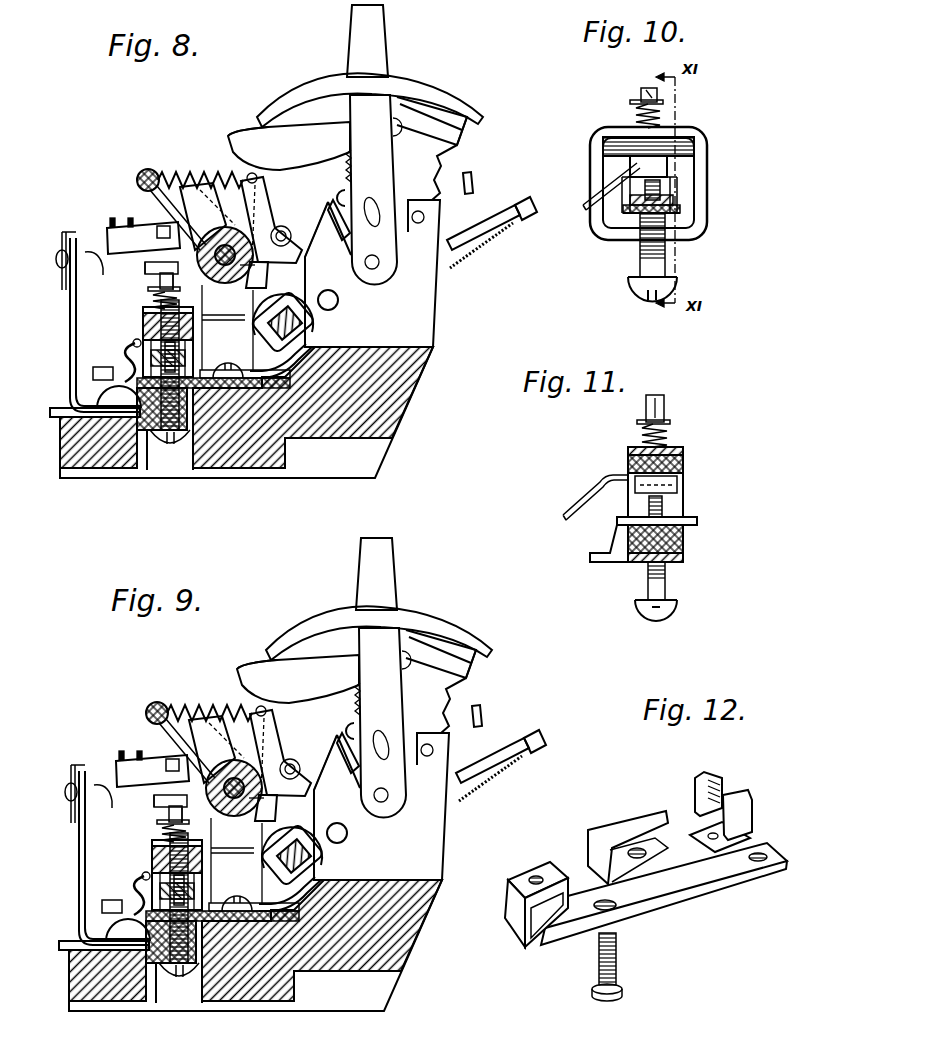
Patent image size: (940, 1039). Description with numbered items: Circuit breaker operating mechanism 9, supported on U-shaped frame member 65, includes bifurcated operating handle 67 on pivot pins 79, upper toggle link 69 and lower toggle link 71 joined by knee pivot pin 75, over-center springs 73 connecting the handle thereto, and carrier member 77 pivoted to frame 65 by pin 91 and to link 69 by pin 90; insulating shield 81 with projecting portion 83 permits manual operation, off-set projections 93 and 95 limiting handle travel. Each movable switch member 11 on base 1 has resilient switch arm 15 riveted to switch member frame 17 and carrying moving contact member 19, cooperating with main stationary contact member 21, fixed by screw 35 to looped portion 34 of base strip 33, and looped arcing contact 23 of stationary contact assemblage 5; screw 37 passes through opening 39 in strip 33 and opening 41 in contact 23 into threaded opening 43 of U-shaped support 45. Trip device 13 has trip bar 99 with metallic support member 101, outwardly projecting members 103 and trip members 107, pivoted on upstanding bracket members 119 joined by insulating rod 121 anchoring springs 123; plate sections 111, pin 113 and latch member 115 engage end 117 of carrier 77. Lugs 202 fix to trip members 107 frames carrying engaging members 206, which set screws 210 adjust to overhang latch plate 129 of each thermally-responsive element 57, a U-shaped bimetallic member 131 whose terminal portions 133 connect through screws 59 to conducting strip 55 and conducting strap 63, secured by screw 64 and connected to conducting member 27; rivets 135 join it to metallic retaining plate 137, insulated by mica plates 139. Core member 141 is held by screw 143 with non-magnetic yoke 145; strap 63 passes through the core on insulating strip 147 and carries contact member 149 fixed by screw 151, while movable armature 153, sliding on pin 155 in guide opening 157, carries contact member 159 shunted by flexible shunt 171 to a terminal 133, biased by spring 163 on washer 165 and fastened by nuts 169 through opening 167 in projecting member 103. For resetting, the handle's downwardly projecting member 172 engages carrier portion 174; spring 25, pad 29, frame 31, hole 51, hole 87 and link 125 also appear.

In FIG. 8, the base 1 is at (400, 401).
In FIG. 9, the base 1 is at (257, 945).
In FIG. 12, the stationary contact assemblage 5 is at (580, 810).
In FIG. 8, the circuit breaker operating mechanism 9 is at (326, 187).
In FIG. 9, the circuit breaker operating mechanism 9 is at (329, 713).
In FIG. 8, the movable switch member 11 is at (534, 206).
In FIG. 9, the movable switch member 11 is at (535, 732).
In FIG. 8, the trip device 13 is at (88, 161).
In FIG. 9, the trip device 13 is at (85, 687).
In FIG. 8, the resilient switch arm 15 is at (512, 210).
In FIG. 9, the resilient switch arm 15 is at (492, 744).
In FIG. 8, the switch member frame 17 is at (283, 292).
In FIG. 9, the switch member frame 17 is at (292, 833).
In FIG. 8, the moving contact member 19 is at (530, 219).
In FIG. 9, the moving contact member 19 is at (535, 752).
In FIG. 12, the main stationary contact member 21 is at (512, 876).
In FIG. 12, the arcing contact 23 is at (622, 828).
In FIG. 8, the spring 25 is at (484, 250).
In FIG. 9, the spring 25 is at (490, 778).
In FIG. 8, the conducting member 27 is at (288, 384).
In FIG. 9, the conducting member 27 is at (290, 907).
In FIG. 8, the pad 29 is at (304, 320).
In FIG. 9, the pad 29 is at (307, 856).
In FIG. 8, the frame 31 is at (300, 298).
In FIG. 9, the frame 31 is at (295, 842).
In FIG. 12, the base strip 33 is at (685, 902).
In FIG. 12, the looped portion 34 is at (513, 925).
In FIG. 12, the screw 35 is at (537, 876).
In FIG. 12, the screw 37 is at (618, 963).
In FIG. 12, the opening 39 is at (616, 910).
In FIG. 12, the opening 41 is at (650, 851).
In FIG. 12, the threaded opening 43 is at (712, 846).
In FIG. 12, the U-shaped support 45 is at (724, 795).
In FIG. 12, the hole 51 is at (759, 863).
In FIG. 8, the conducting strip 55 is at (55, 419).
In FIG. 9, the conducting strip 55 is at (90, 960).
In FIG. 8, the thermally-responsive element 57 is at (34, 243).
In FIG. 9, the thermally-responsive element 57 is at (31, 769).
In FIG. 8, the screw 59 is at (100, 367).
In FIG. 9, the screw 59 is at (123, 911).
In FIG. 8, the conducting strap 63 is at (250, 386).
In FIG. 9, the conducting strap 63 is at (222, 924).
In FIG. 10, the conducting strap 63 is at (680, 209).
In FIG. 11, the conducting strap 63 is at (610, 548).
In FIG. 8, the screw 64 is at (246, 372).
In FIG. 9, the screw 64 is at (254, 898).
In FIG. 8, the U-shaped frame member 65 is at (436, 290).
In FIG. 9, the U-shaped frame member 65 is at (345, 818).
In FIG. 8, the bifurcated operating handle 67 is at (379, 119).
In FIG. 9, the bifurcated operating handle 67 is at (382, 723).
In FIG. 8, the upper toggle link 69 is at (404, 141).
In FIG. 9, the upper toggle link 69 is at (441, 657).
In FIG. 8, the lower toggle link 71 is at (340, 224).
In FIG. 9, the lower toggle link 71 is at (340, 755).
In FIG. 8, the over-center spring 73 is at (346, 165).
In FIG. 9, the over-center spring 73 is at (337, 692).
In FIG. 8, the knee pivot pin 75 is at (337, 198).
In FIG. 9, the knee pivot pin 75 is at (327, 730).
In FIG. 8, the carrier member 77 is at (285, 145).
In FIG. 9, the carrier member 77 is at (298, 676).
In FIG. 8, the pivot pin 79 is at (380, 264).
In FIG. 9, the pivot pin 79 is at (401, 798).
In FIG. 8, the insulating shield 81 is at (414, 78).
In FIG. 9, the insulating shield 81 is at (379, 622).
In FIG. 8, the projecting portion 83 is at (385, 31).
In FIG. 9, the projecting portion 83 is at (396, 574).
In FIG. 8, the hole 87 is at (336, 310).
In FIG. 9, the hole 87 is at (346, 849).
In FIG. 8, the pin 90 is at (402, 129).
In FIG. 9, the pin 90 is at (420, 660).
In FIG. 8, the pin 91 is at (444, 208).
In FIG. 9, the pin 91 is at (464, 739).
In FIG. 8, the off-set projection 93 is at (323, 208).
In FIG. 9, the off-set projection 93 is at (316, 762).
In FIG. 8, the off-set projection 95 is at (425, 218).
In FIG. 9, the off-set projection 95 is at (451, 753).
In FIG. 8, the trip bar 99 is at (212, 233).
In FIG. 9, the trip bar 99 is at (229, 779).
In FIG. 8, the metallic support member 101 is at (256, 266).
In FIG. 9, the metallic support member 101 is at (273, 798).
In FIG. 8, the outwardly projecting member 103 is at (145, 265).
In FIG. 9, the outwardly projecting member 103 is at (153, 795).
In FIG. 8, the trip member 107 is at (150, 232).
In FIG. 9, the trip member 107 is at (152, 771).
In FIG. 8, the plate section 111 is at (274, 222).
In FIG. 9, the plate section 111 is at (280, 753).
In FIG. 8, the pin 113 is at (292, 241).
In FIG. 9, the pin 113 is at (318, 774).
In FIG. 8, the latch member 115 is at (190, 177).
In FIG. 9, the latch member 115 is at (209, 698).
In FIG. 8, the end of carrier 117 is at (238, 134).
In FIG. 9, the end of carrier 117 is at (254, 653).
In FIG. 8, the upstanding bracket member 119 is at (137, 181).
In FIG. 9, the upstanding bracket member 119 is at (162, 739).
In FIG. 8, the insulating rod 121 is at (149, 168).
In FIG. 9, the insulating rod 121 is at (205, 700).
In FIG. 8, the spring 123 is at (213, 182).
In FIG. 9, the spring 123 is at (216, 733).
In FIG. 8, the link 125 is at (252, 222).
In FIG. 9, the link 125 is at (263, 769).
In FIG. 8, the latch plate 129 is at (103, 277).
In FIG. 9, the latch plate 129 is at (107, 812).
In FIG. 8, the U-shaped bimetallic member 131 is at (78, 314).
In FIG. 9, the U-shaped bimetallic member 131 is at (114, 858).
In FIG. 8, the terminal portion 133 is at (62, 440).
In FIG. 9, the terminal portion 133 is at (88, 975).
In FIG. 8, the rivet 135 is at (56, 261).
In FIG. 9, the rivet 135 is at (52, 793).
In FIG. 8, the metallic retaining plate 137 is at (63, 279).
In FIG. 9, the metallic retaining plate 137 is at (53, 798).
In FIG. 8, the mica plate 139 is at (66, 232).
In FIG. 9, the mica plate 139 is at (55, 743).
In FIG. 8, the core member 141 is at (190, 418).
In FIG. 9, the core member 141 is at (195, 944).
In FIG. 10, the core member 141 is at (695, 220).
In FIG. 11, the core member 141 is at (683, 541).
In FIG. 8, the screw 143 is at (183, 440).
In FIG. 9, the screw 143 is at (186, 936).
In FIG. 10, the screw 143 is at (641, 296).
In FIG. 11, the screw 143 is at (640, 611).
In FIG. 8, the yoke 145 is at (170, 450).
In FIG. 9, the yoke 145 is at (179, 983).
In FIG. 10, the yoke 145 is at (707, 192).
In FIG. 11, the yoke 145 is at (683, 491).
In FIG. 8, the insulating strip 147 is at (144, 438).
In FIG. 9, the insulating strip 147 is at (135, 1000).
In FIG. 10, the insulating strip 147 is at (623, 213).
In FIG. 11, the insulating strip 147 is at (630, 565).
In FIG. 8, the contact member 149 is at (193, 361).
In FIG. 9, the contact member 149 is at (202, 889).
In FIG. 10, the contact member 149 is at (673, 198).
In FIG. 11, the contact member 149 is at (697, 521).
In FIG. 8, the screw 151 is at (163, 362).
In FIG. 9, the screw 151 is at (156, 896).
In FIG. 10, the screw 151 is at (660, 190).
In FIG. 11, the screw 151 is at (662, 506).
In FIG. 8, the movable armature 153 is at (195, 326).
In FIG. 9, the movable armature 153 is at (198, 859).
In FIG. 10, the movable armature 153 is at (667, 165).
In FIG. 11, the movable armature 153 is at (683, 463).
In FIG. 8, the pin 155 is at (160, 282).
In FIG. 9, the pin 155 is at (154, 816).
In FIG. 10, the pin 155 is at (660, 93).
In FIG. 11, the pin 155 is at (665, 406).
In FIG. 8, the guide opening 157 is at (195, 310).
In FIG. 9, the guide opening 157 is at (198, 844).
In FIG. 10, the guide opening 157 is at (676, 126).
In FIG. 11, the guide opening 157 is at (672, 447).
In FIG. 8, the contact member 159 is at (195, 346).
In FIG. 9, the contact member 159 is at (198, 888).
In FIG. 10, the contact member 159 is at (677, 185).
In FIG. 11, the contact member 159 is at (628, 486).
In FIG. 8, the spring 163 is at (152, 304).
In FIG. 9, the spring 163 is at (154, 844).
In FIG. 10, the spring 163 is at (636, 117).
In FIG. 11, the spring 163 is at (642, 437).
In FIG. 8, the washer 165 is at (182, 292).
In FIG. 9, the washer 165 is at (198, 829).
In FIG. 10, the washer 165 is at (630, 102).
In FIG. 11, the washer 165 is at (637, 422).
In FIG. 8, the opening 167 is at (186, 280).
In FIG. 9, the opening 167 is at (195, 813).
In FIG. 8, the nut 169 is at (158, 228).
In FIG. 9, the nut 169 is at (151, 750).
In FIG. 8, the flexible shunt 171 is at (132, 343).
In FIG. 9, the flexible shunt 171 is at (129, 890).
In FIG. 10, the flexible shunt 171 is at (585, 198).
In FIG. 11, the flexible shunt 171 is at (583, 500).
In FIG. 8, the downwardly projecting member 172 is at (462, 133).
In FIG. 9, the downwardly projecting member 172 is at (489, 664).
In FIG. 8, the portion of carrier 174 is at (456, 152).
In FIG. 9, the portion of carrier 174 is at (462, 705).
In FIG. 8, the lug 202 is at (108, 228).
In FIG. 9, the lug 202 is at (106, 748).
In FIG. 8, the engaging member 206 is at (145, 270).
In FIG. 9, the engaging member 206 is at (134, 804).
In FIG. 8, the set screw 210 is at (110, 222).
In FIG. 9, the set screw 210 is at (101, 739).